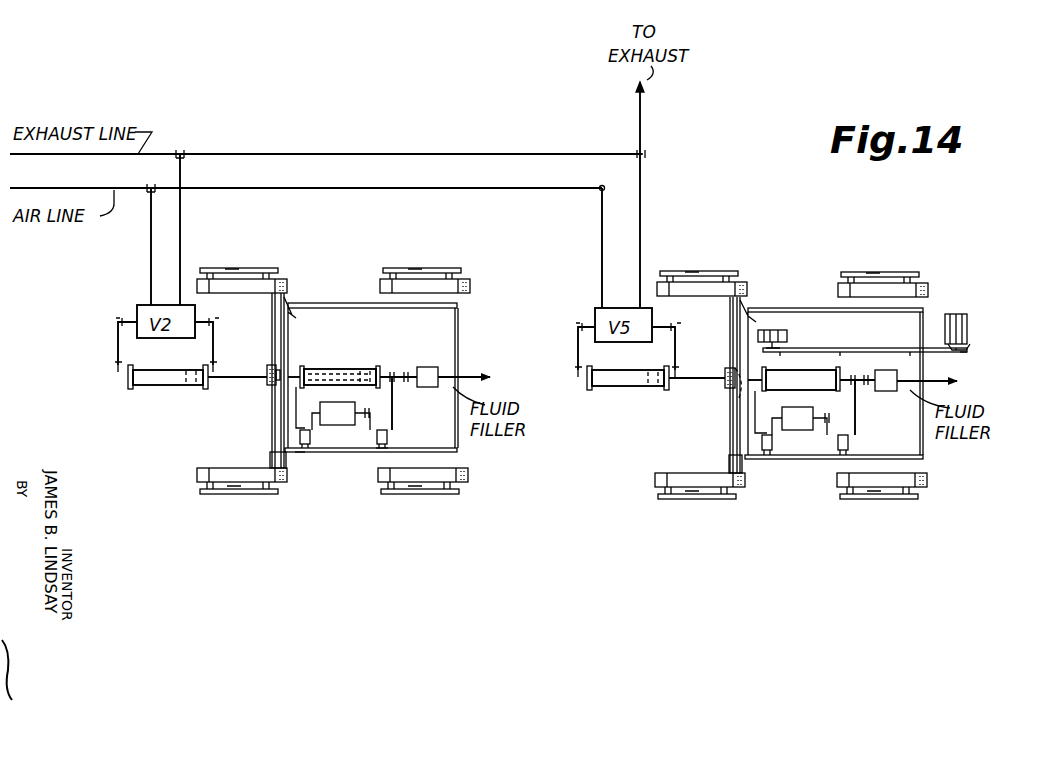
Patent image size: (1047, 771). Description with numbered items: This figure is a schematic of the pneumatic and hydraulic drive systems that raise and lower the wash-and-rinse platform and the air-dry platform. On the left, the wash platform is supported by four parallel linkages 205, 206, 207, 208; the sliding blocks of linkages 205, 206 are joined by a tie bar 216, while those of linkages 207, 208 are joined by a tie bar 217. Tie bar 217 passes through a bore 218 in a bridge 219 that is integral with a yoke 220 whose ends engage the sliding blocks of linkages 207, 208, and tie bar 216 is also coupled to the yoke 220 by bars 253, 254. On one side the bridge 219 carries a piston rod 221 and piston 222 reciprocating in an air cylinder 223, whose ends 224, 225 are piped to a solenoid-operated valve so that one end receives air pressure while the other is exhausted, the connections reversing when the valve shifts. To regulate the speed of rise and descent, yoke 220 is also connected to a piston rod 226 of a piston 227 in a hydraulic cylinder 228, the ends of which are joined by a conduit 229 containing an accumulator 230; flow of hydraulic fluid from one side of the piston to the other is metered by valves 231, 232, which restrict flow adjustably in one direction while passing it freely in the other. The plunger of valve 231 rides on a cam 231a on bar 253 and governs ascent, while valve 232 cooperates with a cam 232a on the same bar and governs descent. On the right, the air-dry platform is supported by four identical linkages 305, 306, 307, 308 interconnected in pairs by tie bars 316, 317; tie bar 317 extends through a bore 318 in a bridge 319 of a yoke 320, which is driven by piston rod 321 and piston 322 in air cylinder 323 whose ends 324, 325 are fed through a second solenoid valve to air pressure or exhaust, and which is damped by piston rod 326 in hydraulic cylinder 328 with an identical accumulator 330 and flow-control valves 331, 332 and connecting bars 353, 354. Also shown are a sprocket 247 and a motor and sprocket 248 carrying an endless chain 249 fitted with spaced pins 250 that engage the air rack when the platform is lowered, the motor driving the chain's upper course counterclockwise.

The linkage 205 is at (445, 501).
The linkage 206 is at (441, 263).
The linkage 207 is at (253, 501).
The linkage 208 is at (254, 266).
The tie bar 216 is at (458, 338).
The tie bar 217 is at (270, 447).
The bore 218 is at (267, 371).
The bridge 219 is at (268, 388).
The yoke 220 is at (286, 454).
The piston rod 221 is at (242, 388).
The piston 222 is at (184, 386).
The cylinder 223 is at (136, 388).
The cylinder end connection 224 is at (118, 370).
The cylinder end connection 225 is at (209, 366).
The piston rod 226 is at (292, 366).
The piston 227 is at (360, 364).
The cylinder 228 is at (338, 366).
The conduit 229 is at (395, 405).
The accumulator 230 is at (339, 413).
The valve 231 is at (312, 440).
The cam 231a is at (330, 452).
The valve 232 is at (387, 440).
The cam 232a is at (382, 454).
The bar 253 is at (362, 452).
The bar 254 is at (352, 284).
The sprocket 247 is at (784, 342).
The motor and sprocket 248 is at (970, 342).
The endless chain 249 is at (855, 348).
The pins 250 is at (967, 352).
The linkage 305 is at (907, 506).
The linkage 306 is at (914, 268).
The linkage 307 is at (721, 501).
The linkage 308 is at (716, 267).
The tie bar 316 is at (924, 316).
The tie bar 317 is at (732, 456).
The bore 318 is at (730, 420).
The bridge 319 is at (724, 390).
The yoke 320 is at (737, 455).
The piston rod 321 is at (710, 390).
The piston 322 is at (658, 388).
The air cylinder 323 is at (607, 388).
The cylinder end connection 324 is at (578, 372).
The cylinder end connection 325 is at (670, 365).
The piston rod 326 is at (740, 378).
The cylinder 328 is at (780, 377).
The control valve 330 is at (801, 418).
The valve 331 is at (769, 452).
The valve 332 is at (840, 452).
The frame bottom member 353 is at (924, 463).
The frame top member 354 is at (800, 292).